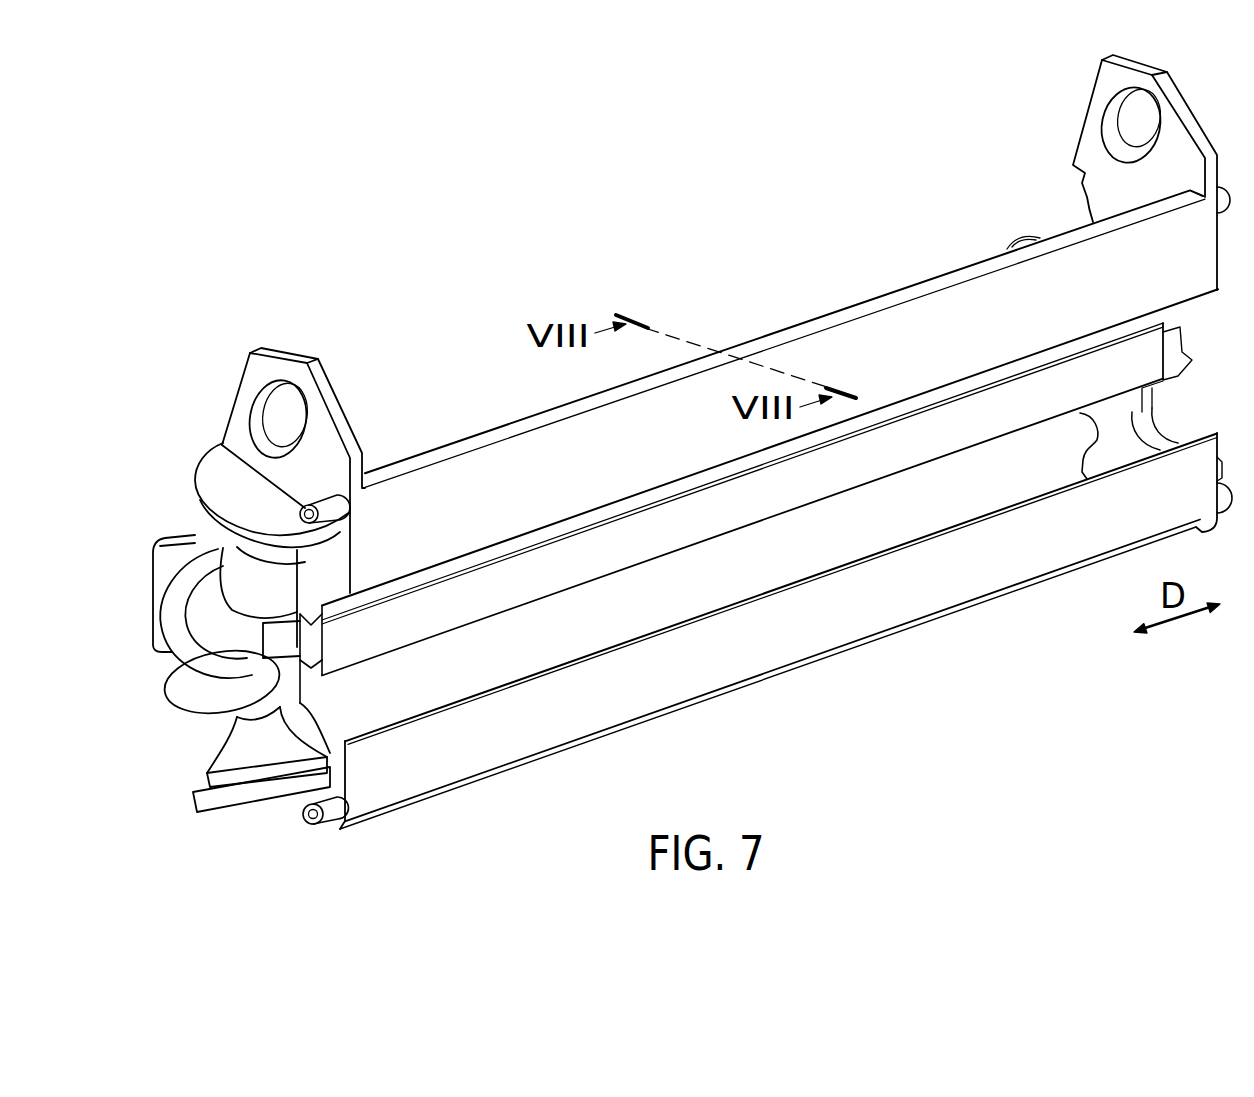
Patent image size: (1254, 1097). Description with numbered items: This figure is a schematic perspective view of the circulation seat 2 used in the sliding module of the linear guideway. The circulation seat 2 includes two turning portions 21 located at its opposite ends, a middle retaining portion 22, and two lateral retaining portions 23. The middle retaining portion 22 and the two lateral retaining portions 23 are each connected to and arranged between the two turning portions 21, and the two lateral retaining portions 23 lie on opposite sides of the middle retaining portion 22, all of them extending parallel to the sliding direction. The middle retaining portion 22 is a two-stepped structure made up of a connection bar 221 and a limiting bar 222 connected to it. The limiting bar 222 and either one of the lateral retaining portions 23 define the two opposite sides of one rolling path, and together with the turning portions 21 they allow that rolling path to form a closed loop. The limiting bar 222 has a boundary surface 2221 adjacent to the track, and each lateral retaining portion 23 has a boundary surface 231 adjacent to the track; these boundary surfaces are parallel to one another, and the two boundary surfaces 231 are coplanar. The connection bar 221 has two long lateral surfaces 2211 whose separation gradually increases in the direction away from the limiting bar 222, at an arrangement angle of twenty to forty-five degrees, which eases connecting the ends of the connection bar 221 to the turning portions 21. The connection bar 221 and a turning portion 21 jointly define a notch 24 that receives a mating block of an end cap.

The circulation seat 2 is at (666, 442).
The turning portion 21 is at (170, 567).
The middle retaining portion 22 is at (727, 382).
The connection bar 221 is at (727, 382).
The long lateral surface 2211 is at (312, 664).
The limiting bar 222 is at (770, 482).
The boundary surface 2221 is at (598, 553).
The lateral retaining portion 23 is at (760, 509).
The boundary surface 231 is at (922, 330).
The notch 24 is at (278, 650).